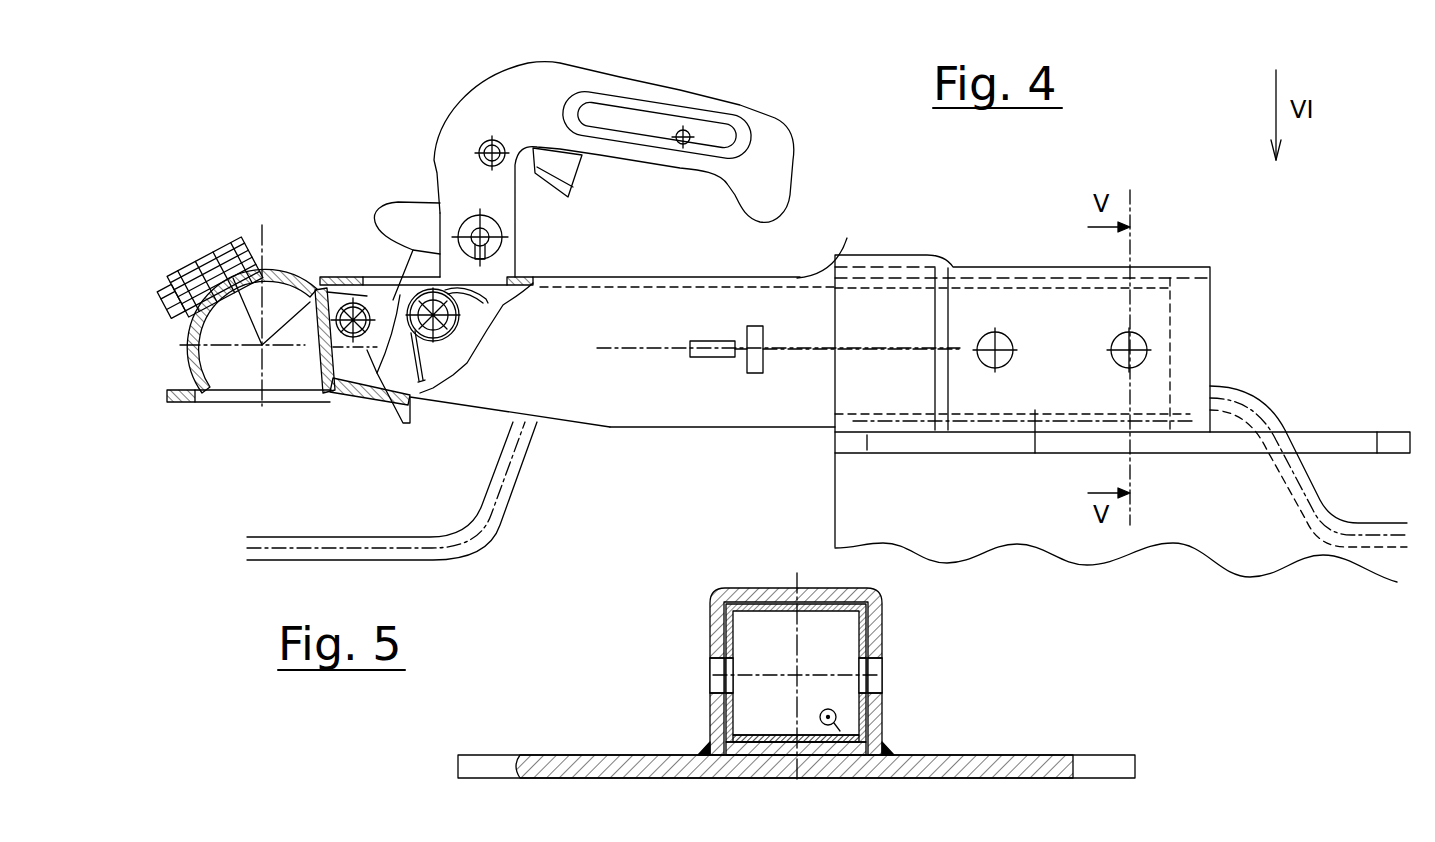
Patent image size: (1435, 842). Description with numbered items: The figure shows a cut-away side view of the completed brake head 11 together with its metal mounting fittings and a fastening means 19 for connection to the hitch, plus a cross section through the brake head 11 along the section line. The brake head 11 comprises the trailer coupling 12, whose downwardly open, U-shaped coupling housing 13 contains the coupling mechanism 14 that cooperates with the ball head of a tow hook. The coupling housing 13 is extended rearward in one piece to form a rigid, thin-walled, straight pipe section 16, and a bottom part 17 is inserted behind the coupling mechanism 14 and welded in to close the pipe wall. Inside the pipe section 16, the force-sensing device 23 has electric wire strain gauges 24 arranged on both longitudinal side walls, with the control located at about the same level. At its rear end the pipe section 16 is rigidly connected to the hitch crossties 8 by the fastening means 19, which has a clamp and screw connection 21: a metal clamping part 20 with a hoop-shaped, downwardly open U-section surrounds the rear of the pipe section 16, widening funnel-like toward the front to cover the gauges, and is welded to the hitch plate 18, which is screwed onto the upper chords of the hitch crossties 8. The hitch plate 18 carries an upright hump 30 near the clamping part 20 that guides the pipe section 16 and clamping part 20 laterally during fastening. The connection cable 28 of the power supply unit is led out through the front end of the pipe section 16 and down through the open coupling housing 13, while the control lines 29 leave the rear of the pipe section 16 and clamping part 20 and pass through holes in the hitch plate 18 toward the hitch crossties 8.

In FIG. 4, the hitch crosstie 8 is at (1210, 512).
In FIG. 4, the brake head 11 is at (302, 222).
In FIG. 4, the trailer coupling 12 is at (361, 276).
In FIG. 4, the coupling housing 13 is at (493, 368).
In FIG. 4, the coupling mechanism 14 is at (327, 390).
In FIG. 4, the pipe section 16 is at (795, 407).
In FIG. 5, the pipe section 16 is at (730, 712).
In FIG. 5, the bottom part 17 is at (780, 742).
In FIG. 4, the hitch plate 18 is at (1335, 440).
In FIG. 5, the hitch plate 18 is at (580, 765).
In FIG. 4, the fastening means 19 is at (1186, 240).
In FIG. 4, the clamping part 20 is at (885, 255).
In FIG. 5, the clamping part 20 is at (882, 630).
In FIG. 4, the clamp and screw connection 21 is at (1122, 342).
In FIG. 5, the clamp and screw connection 21 is at (712, 678).
In FIG. 4, the force-sensing device 23 is at (715, 370).
In FIG. 4, the wire strain gauge 24 is at (755, 349).
In FIG. 4, the connection cable 28 is at (340, 536).
In FIG. 4, the control line 29 is at (1258, 400).
In FIG. 5, the control line 29 is at (828, 708).
In FIG. 5, the hump 30 is at (815, 750).